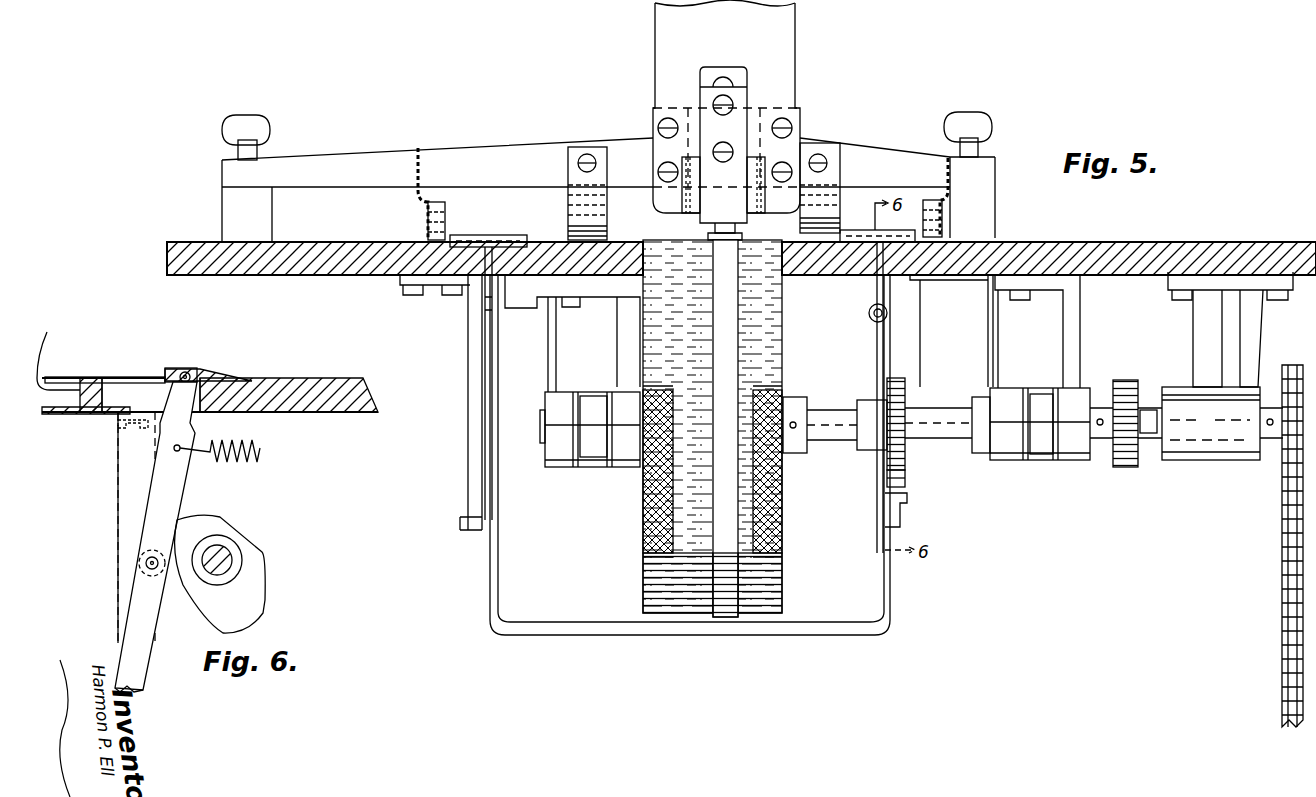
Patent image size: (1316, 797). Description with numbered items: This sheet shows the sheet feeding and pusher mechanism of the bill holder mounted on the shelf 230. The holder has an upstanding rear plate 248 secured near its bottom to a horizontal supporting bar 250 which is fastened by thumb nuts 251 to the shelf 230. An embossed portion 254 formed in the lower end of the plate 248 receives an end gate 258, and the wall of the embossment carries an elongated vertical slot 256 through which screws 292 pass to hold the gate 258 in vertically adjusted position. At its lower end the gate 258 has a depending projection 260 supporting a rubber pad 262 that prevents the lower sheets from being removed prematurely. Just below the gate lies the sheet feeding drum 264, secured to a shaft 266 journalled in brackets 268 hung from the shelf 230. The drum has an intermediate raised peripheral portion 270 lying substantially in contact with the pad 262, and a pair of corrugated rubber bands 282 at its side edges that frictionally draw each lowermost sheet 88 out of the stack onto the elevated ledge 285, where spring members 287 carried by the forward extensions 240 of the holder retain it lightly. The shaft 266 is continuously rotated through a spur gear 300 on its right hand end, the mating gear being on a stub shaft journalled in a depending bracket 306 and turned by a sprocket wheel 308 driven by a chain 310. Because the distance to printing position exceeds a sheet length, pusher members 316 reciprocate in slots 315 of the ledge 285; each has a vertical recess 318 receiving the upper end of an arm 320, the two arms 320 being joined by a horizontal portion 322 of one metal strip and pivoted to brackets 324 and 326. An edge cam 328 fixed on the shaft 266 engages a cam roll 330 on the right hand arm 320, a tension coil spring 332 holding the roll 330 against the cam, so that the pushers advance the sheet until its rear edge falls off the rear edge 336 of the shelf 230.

In FIG. 5, the upstanding rear plate 248 is at (778, 33).
In FIG. 5, the horizontal supporting bar 250 is at (483, 157).
In FIG. 5, the thumb nuts 251 is at (262, 125).
In FIG. 5, the embossed portion 254 is at (740, 80).
In FIG. 5, the elongated vertical slot 256 is at (716, 74).
In FIG. 5, the end gate 258 is at (730, 120).
In FIG. 5, the depending projection 260 is at (723, 222).
In FIG. 5, the rubber pad 262 is at (738, 232).
In FIG. 5, the sheet feeding drum 264 is at (763, 343).
In FIG. 5, the shaft 266 is at (837, 438).
In FIG. 6, the shaft 266 is at (230, 556).
In FIG. 5, the brackets 268 is at (558, 368).
In FIG. 5, the intermediate raised peripheral portion 270 is at (722, 359).
In FIG. 5, the corrugated rubber bands 282 is at (640, 512).
In FIG. 6, the elevated ledge 285 is at (60, 413).
In FIG. 5, the spring members 287 is at (445, 225).
In FIG. 5, the screws 292 is at (718, 143).
In FIG. 5, the spur gear 300 is at (1128, 377).
In FIG. 5, the depending bracket 306 is at (1248, 354).
In FIG. 5, the sprocket wheel 308 is at (1278, 453).
In FIG. 5, the chain 310 is at (1287, 533).
In FIG. 5, the slots 315 is at (510, 273).
In FIG. 6, the slots 315 is at (118, 402).
In FIG. 5, the pusher members 316 is at (508, 233).
In FIG. 6, the pusher members 316 is at (218, 375).
In FIG. 6, the vertical slot or recess 318 is at (193, 372).
In FIG. 5, the vertical arms 320 is at (490, 368).
In FIG. 6, the vertical arms 320 is at (173, 496).
In FIG. 5, the horizontal portion 322 is at (622, 634).
In FIG. 5, the bracket 324 is at (522, 432).
In FIG. 5, the bracket 326 is at (905, 478).
In FIG. 6, the bracket 326 is at (125, 496).
In FIG. 5, the edge cam 328 is at (905, 486).
In FIG. 6, the edge cam 328 is at (252, 576).
In FIG. 5, the cam roll 330 is at (897, 405).
In FIG. 6, the cam roll 330 is at (137, 561).
In FIG. 5, the tension coil spring 332 is at (872, 320).
In FIG. 6, the tension coil spring 332 is at (263, 446).
In FIG. 6, the rear edge 336 is at (58, 351).
In FIG. 6, the sheet 88 is at (65, 377).
In FIG. 5, the shelf 230 is at (1120, 240).
In FIG. 6, the shelf 230 is at (353, 382).
In FIG. 5, the forward extensions 240 is at (426, 208).